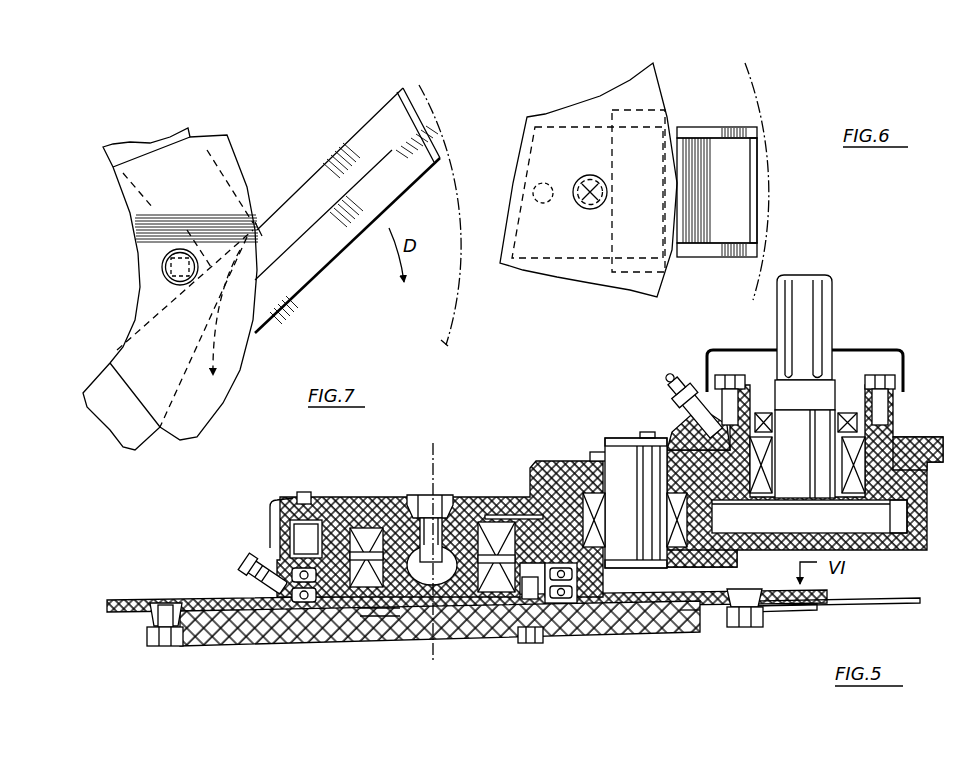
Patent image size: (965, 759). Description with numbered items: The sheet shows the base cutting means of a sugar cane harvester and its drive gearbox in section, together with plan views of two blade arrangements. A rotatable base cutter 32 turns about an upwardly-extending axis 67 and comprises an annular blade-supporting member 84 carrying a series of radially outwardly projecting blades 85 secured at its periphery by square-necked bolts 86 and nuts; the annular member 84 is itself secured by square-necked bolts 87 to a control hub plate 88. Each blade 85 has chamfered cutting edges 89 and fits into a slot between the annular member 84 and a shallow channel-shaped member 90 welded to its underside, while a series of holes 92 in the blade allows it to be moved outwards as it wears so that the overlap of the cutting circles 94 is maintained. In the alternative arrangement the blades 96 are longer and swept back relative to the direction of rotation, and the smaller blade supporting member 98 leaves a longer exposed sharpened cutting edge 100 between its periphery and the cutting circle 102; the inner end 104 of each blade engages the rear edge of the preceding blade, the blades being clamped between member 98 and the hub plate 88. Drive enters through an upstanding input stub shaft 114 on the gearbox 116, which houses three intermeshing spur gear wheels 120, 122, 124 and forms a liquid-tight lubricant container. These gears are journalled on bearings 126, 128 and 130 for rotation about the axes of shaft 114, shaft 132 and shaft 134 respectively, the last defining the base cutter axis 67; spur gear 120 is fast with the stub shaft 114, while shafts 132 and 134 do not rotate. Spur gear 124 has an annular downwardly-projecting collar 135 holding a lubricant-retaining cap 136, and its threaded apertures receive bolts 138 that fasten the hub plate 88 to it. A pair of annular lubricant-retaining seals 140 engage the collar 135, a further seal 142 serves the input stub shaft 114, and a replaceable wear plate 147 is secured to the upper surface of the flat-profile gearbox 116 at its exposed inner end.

In FIG. 5, the base cutter 32 is at (240, 648).
In FIG. 5, the axis 67 is at (435, 495).
In FIG. 6, the annular blade-supporting member 84 is at (653, 92).
In FIG. 5, the annular blade-supporting member 84 is at (113, 599).
In FIG. 6, the blade 85 is at (743, 165).
In FIG. 5, the blade 85 is at (870, 604).
In FIG. 6, the square-necked bolt 86 is at (570, 200).
In FIG. 5, the square-necked bolt 86 is at (747, 627).
In FIG. 7, the square-necked bolt 87 is at (163, 258).
In FIG. 5, the square-necked bolt 87 is at (165, 601).
In FIG. 5, the control hub plate 88 is at (378, 633).
In FIG. 6, the chamfered cutting edge 89 is at (728, 130).
In FIG. 6, the shallow channel-shaped member 90 is at (630, 273).
In FIG. 5, the shallow channel-shaped member 90 is at (823, 611).
In FIG. 6, the hole 92 is at (544, 182).
In FIG. 5, the hole 92 is at (690, 622).
In FIG. 6, the cutting circle 94 is at (760, 94).
In FIG. 7, the blade 96 is at (356, 142).
In FIG. 7, the blade supporting member 98 is at (217, 397).
In FIG. 7, the sharpened cutting edge 100 is at (424, 122).
In FIG. 7, the cutting circle 102 is at (445, 341).
In FIG. 7, the inner end 104 is at (262, 212).
In FIG. 5, the drive input stub shaft 114 is at (832, 302).
In FIG. 5, the gearbox 116 is at (497, 497).
In FIG. 5, the spur gear wheel 120 is at (902, 518).
In FIG. 5, the spur gear wheel 122 is at (740, 540).
In FIG. 5, the spur gear wheel 124 is at (300, 538).
In FIG. 5, the bearing 126 is at (880, 446).
In FIG. 5, the bearing 128 is at (592, 500).
In FIG. 5, the bearing 130 is at (370, 533).
In FIG. 5, the shaft 132 is at (622, 474).
In FIG. 5, the shaft 134 is at (393, 517).
In FIG. 5, the annular downwardly-projecting collar 135 is at (320, 605).
In FIG. 5, the lubricant-retaining cap 136 is at (460, 617).
In FIG. 5, the bolt 138 is at (528, 621).
In FIG. 5, the annular lubricant-retaining seal 140 is at (562, 604).
In FIG. 5, the seal 142 is at (845, 386).
In FIG. 5, the replaceable wear plate 147 is at (270, 504).